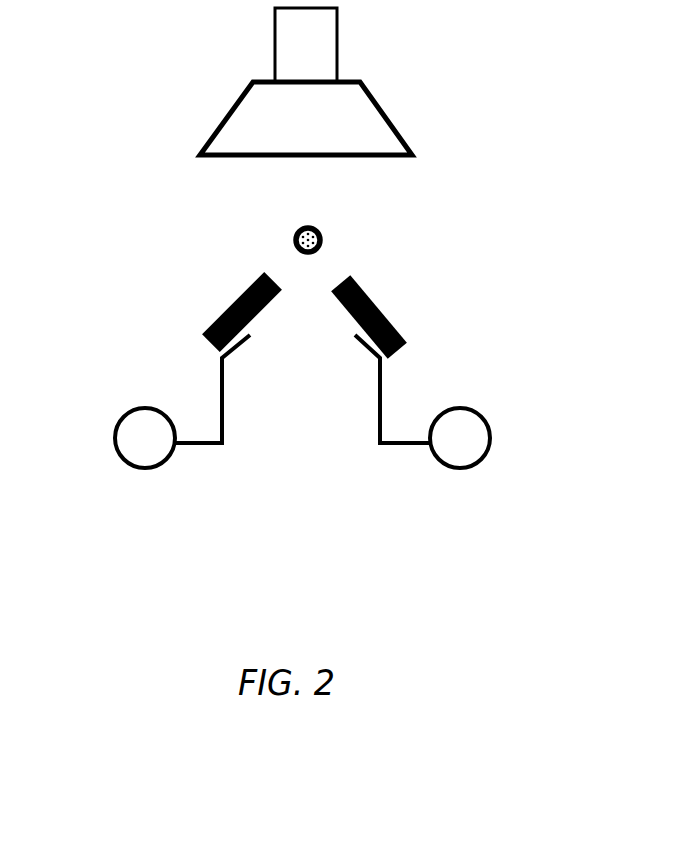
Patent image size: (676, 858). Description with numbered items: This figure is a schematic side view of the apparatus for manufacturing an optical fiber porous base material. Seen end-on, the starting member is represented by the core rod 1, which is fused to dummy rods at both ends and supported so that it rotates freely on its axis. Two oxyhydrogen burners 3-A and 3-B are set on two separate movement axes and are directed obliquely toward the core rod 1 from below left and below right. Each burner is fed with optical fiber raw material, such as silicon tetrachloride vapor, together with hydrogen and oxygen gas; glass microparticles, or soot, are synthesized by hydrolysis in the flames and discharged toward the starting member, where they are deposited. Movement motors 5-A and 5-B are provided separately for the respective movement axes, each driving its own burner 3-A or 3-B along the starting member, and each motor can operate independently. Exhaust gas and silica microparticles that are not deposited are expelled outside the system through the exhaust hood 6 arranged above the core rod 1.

The exhaust hood 6 is at (306, 81).
The core rod 1 is at (324, 224).
The burner 3-A is at (220, 352).
The burner 3-B is at (390, 359).
The movement motor 5-A is at (133, 446).
The movement motor 5-B is at (467, 452).